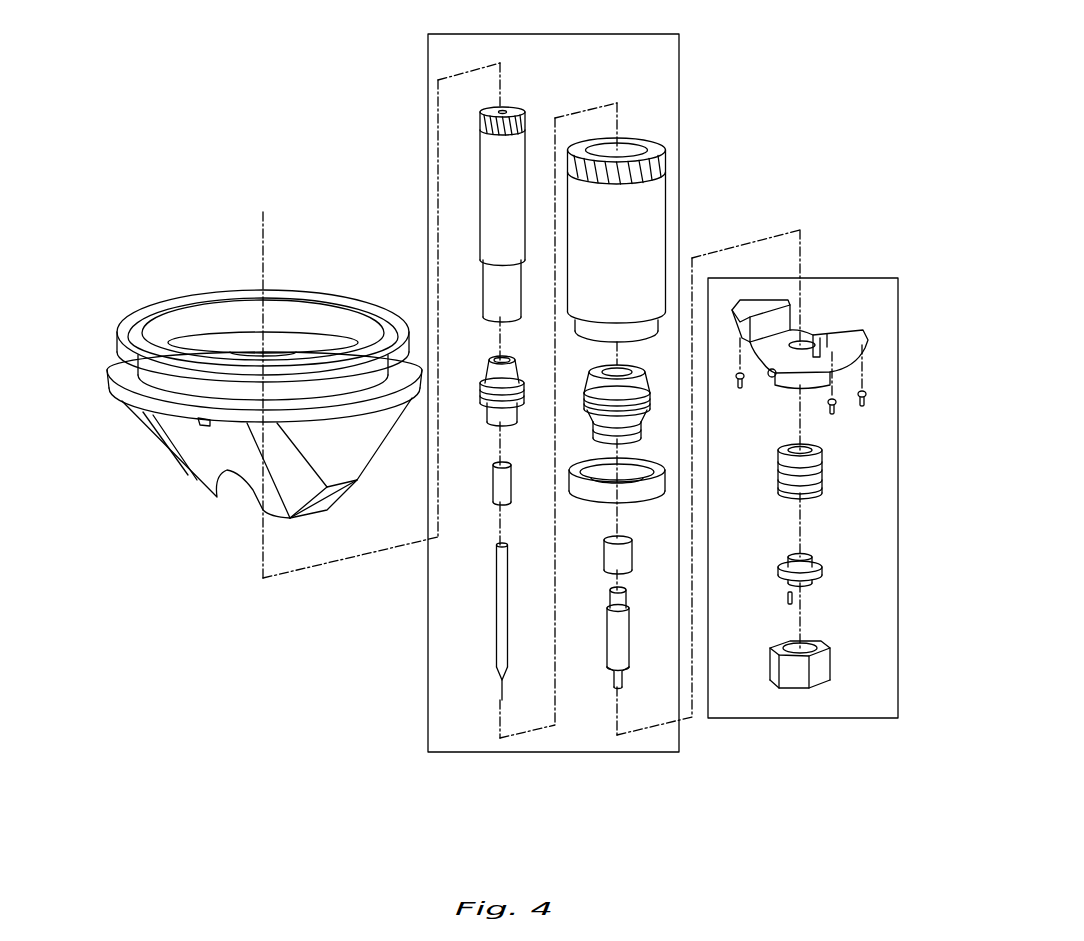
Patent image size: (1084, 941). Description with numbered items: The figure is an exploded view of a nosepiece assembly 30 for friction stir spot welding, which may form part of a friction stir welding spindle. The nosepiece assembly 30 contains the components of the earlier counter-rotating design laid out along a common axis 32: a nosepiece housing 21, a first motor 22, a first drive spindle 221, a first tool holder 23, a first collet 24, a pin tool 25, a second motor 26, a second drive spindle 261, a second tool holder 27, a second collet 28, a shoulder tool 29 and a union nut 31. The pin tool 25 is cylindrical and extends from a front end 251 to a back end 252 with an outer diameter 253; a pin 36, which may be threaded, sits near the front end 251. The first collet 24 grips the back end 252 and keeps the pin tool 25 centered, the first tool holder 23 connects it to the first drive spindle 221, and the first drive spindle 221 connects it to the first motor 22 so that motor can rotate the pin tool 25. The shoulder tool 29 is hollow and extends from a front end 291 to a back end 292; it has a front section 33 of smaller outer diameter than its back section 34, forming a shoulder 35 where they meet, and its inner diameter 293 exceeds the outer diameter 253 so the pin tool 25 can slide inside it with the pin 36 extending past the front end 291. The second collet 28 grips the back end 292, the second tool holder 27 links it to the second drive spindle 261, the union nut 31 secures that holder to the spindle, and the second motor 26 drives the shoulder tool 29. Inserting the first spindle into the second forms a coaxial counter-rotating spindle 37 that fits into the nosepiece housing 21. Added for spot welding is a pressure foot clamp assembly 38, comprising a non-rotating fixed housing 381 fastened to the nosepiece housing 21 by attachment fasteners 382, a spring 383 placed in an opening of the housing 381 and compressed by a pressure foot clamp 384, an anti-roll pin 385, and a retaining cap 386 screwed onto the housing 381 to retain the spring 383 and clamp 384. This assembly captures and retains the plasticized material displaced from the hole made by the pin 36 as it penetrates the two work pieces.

The nosepiece housing 21 is at (152, 304).
The first motor 22 is at (486, 203).
The first drive spindle 221 is at (486, 190).
The first tool holder 23 is at (486, 373).
The first collet 24 is at (498, 483).
The pin tool 25 is at (497, 634).
The front end 251 is at (504, 696).
The back end 252 is at (499, 546).
The outer diameter 253 is at (475, 590).
The second motor 26 is at (650, 240).
The second drive spindle 261 is at (652, 215).
The second tool holder 27 is at (643, 383).
The second collet 28 is at (622, 556).
The shoulder tool 29 is at (624, 639).
The front end 291 is at (617, 688).
The back end 292 is at (630, 608).
The inner diameter 293 is at (652, 598).
The nosepiece assembly 30 is at (263, 414).
The union nut 31 is at (588, 494).
The axis 32 is at (260, 214).
The front section 33 is at (613, 678).
The back section 34 is at (610, 631).
The shoulder 35 is at (625, 673).
The pin 36 is at (501, 689).
The counter-rotating spindle 37 is at (656, 34).
The pressure foot clamp assembly 38 is at (820, 278).
The non-rotating fixed housing 381 is at (838, 330).
The attachment fasteners 382 is at (864, 402).
The spring 383 is at (828, 475).
The pressure foot clamp 384 is at (823, 573).
The anti-roll pin 385 is at (787, 603).
The retaining cap 386 is at (835, 668).